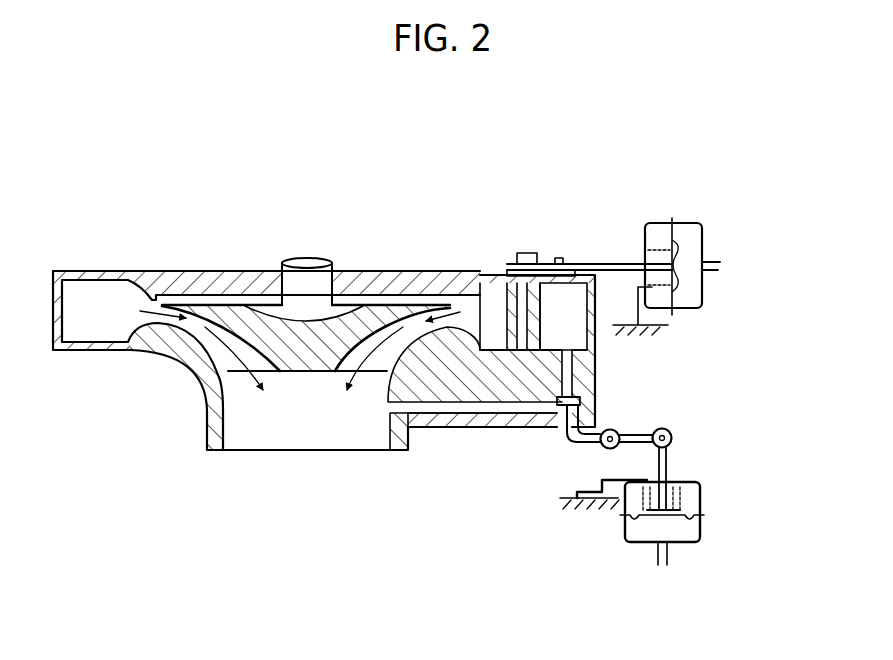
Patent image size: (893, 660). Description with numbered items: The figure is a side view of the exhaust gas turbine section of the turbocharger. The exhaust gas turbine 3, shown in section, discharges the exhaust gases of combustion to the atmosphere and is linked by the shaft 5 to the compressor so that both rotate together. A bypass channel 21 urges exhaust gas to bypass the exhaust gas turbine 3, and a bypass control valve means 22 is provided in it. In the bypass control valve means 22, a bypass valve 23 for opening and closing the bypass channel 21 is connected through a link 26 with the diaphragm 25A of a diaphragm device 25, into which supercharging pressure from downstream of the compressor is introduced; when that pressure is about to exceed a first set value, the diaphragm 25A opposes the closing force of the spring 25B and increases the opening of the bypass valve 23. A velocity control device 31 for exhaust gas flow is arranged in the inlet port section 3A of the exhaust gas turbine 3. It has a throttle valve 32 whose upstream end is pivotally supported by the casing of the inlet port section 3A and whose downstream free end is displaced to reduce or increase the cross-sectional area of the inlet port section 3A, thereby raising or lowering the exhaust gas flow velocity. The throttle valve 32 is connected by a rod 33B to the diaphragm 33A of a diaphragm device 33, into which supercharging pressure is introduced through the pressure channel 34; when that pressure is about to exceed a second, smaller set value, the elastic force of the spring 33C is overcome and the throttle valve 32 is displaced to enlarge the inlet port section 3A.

The exhaust gas turbine 3 is at (230, 254).
The inlet port section 3A is at (577, 326).
The shaft 5 is at (298, 270).
The bypass channel 21 is at (463, 407).
The bypass control valve means 22 is at (592, 515).
The bypass valve 23 is at (550, 410).
The diaphragm device 25 is at (703, 550).
The diaphragm 25A is at (632, 520).
The spring 25B is at (690, 505).
The link 26 is at (660, 432).
The velocity control device 31 is at (646, 242).
The throttle valve 32 is at (490, 278).
The diaphragm device 33 is at (700, 308).
The diaphragm 33A is at (680, 240).
The rod 33B is at (610, 264).
The spring 33C is at (673, 247).
The pressure channel 34 is at (715, 272).